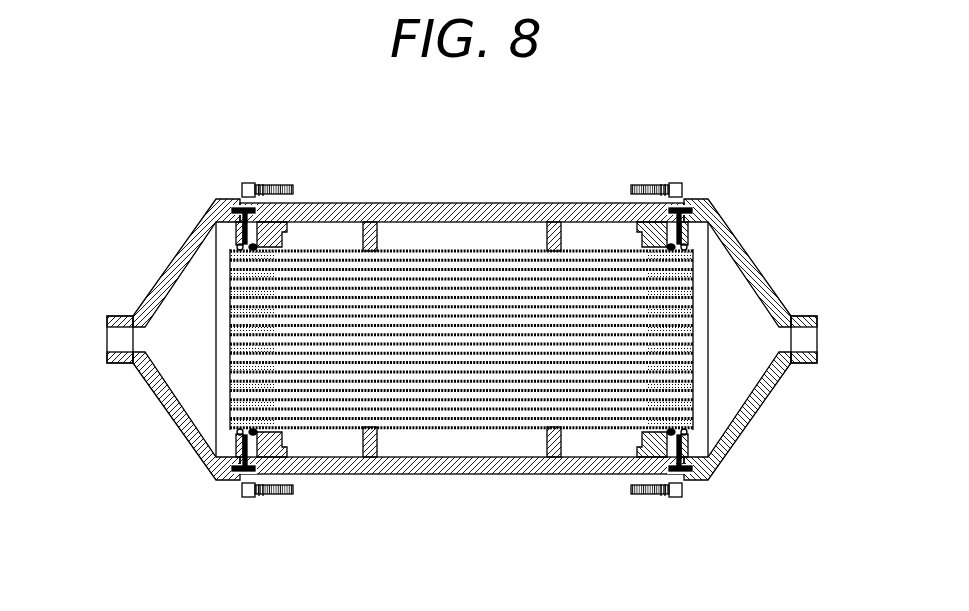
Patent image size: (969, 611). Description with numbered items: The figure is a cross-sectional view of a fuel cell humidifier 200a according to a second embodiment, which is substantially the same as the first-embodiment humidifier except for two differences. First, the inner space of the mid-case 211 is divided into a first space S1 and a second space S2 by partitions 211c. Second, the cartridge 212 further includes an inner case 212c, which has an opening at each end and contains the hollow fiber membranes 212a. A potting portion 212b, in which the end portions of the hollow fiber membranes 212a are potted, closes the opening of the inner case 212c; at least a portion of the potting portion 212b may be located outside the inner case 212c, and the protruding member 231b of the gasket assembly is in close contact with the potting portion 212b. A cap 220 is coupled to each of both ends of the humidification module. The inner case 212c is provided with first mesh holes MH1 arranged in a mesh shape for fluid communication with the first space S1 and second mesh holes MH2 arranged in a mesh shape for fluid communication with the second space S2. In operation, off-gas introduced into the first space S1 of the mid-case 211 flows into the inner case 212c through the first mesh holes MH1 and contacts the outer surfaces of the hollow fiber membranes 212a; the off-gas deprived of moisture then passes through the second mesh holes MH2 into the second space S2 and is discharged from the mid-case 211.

The fuel cell humidifier 200a is at (482, 129).
The mid-case 211 is at (421, 217).
The partitions 211c is at (548, 234).
The cartridge 212 is at (297, 113).
The hollow fiber membranes 212a is at (240, 247).
The potting portion 212b is at (221, 253).
The inner case 212c is at (280, 224).
The cap 220 is at (172, 420).
The protruding member 231b is at (232, 278).
The first mesh holes MH1 is at (320, 248).
The second mesh holes MH2 is at (602, 248).
The first space S1 is at (327, 441).
The second space S2 is at (602, 441).